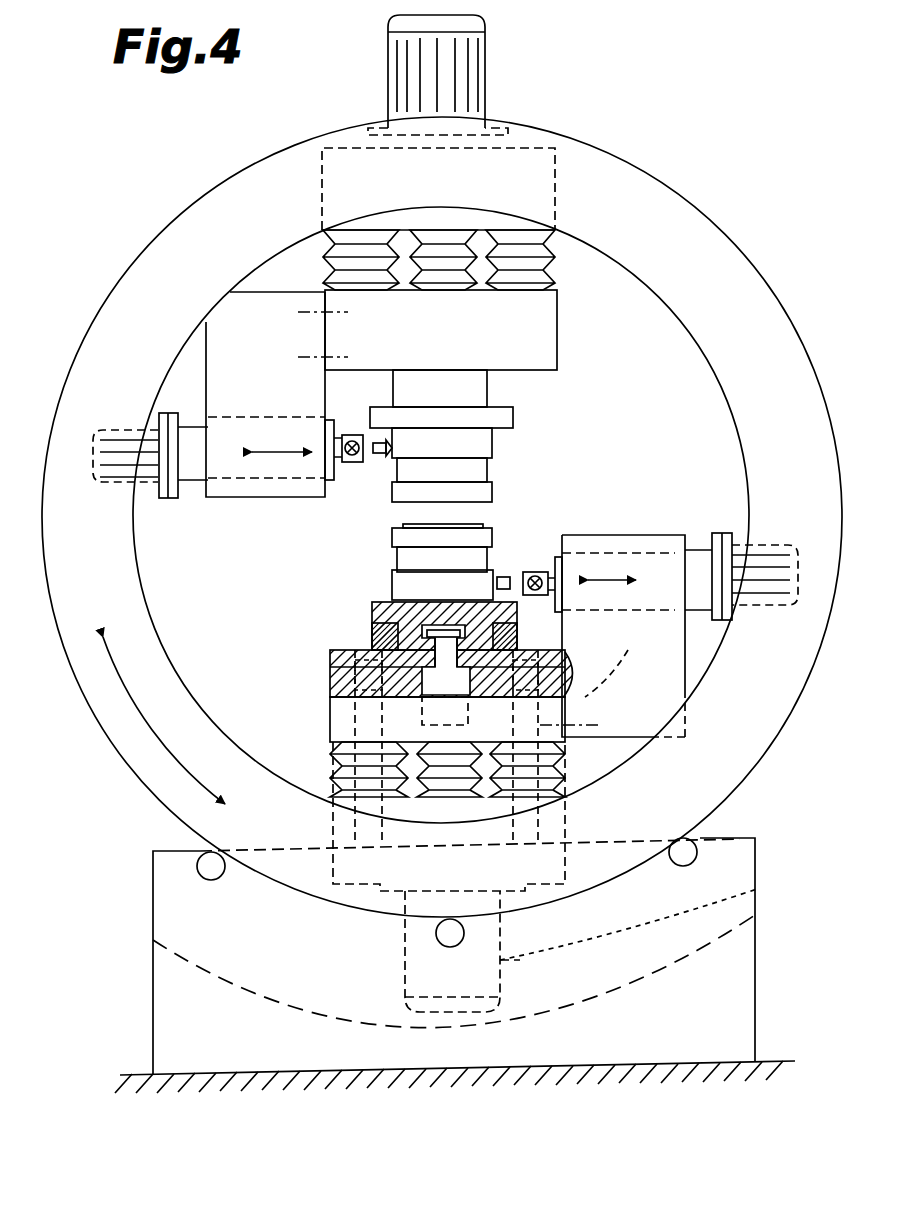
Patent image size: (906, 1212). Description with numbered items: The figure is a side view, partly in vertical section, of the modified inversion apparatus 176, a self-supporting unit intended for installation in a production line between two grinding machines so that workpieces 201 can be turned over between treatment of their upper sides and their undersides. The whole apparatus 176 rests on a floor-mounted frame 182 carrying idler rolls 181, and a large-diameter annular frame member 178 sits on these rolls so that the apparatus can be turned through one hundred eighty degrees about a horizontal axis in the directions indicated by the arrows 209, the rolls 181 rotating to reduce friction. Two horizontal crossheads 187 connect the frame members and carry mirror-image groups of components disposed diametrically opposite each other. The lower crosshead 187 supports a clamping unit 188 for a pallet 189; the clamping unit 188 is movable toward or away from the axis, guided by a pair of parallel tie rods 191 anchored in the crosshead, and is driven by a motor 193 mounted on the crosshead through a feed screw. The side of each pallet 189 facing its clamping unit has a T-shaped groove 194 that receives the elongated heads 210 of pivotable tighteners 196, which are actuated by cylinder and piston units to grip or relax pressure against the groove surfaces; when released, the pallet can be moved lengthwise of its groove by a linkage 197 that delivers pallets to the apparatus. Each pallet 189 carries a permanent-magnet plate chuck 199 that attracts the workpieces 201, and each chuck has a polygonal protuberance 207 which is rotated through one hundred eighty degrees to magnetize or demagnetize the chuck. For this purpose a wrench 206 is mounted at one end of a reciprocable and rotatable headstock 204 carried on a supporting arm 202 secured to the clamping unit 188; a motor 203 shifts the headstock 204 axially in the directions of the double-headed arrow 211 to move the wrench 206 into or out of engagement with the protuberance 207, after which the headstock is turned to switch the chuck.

The apparatus 176 is at (736, 177).
The frame member 178 is at (702, 246).
The idler rolls 181 is at (205, 867).
The frame 182 is at (735, 976).
The crosshead 187 is at (555, 170).
The clamping unit 188 is at (540, 338).
The pallet 189 is at (500, 418).
The tie rods 191 is at (592, 674).
The motor 193 is at (462, 50).
The T-shaped groove 194 is at (450, 640).
The tighteners 196 is at (332, 668).
The linkage 197 is at (372, 636).
The permanent-magnet plate chuck 199 is at (483, 490).
The workpieces 201 is at (480, 522).
The supporting arm 202 is at (233, 320).
The motor 203 is at (121, 440).
The headstock 204 is at (193, 480).
The wrench 206 is at (357, 462).
The polygonal protuberance 207 is at (378, 455).
The arrows 209 is at (152, 732).
The heads 210 is at (445, 625).
The double-headed arrow 211 is at (285, 450).